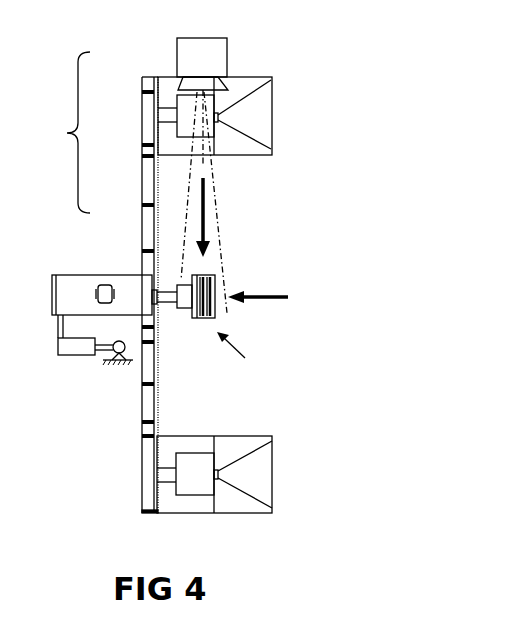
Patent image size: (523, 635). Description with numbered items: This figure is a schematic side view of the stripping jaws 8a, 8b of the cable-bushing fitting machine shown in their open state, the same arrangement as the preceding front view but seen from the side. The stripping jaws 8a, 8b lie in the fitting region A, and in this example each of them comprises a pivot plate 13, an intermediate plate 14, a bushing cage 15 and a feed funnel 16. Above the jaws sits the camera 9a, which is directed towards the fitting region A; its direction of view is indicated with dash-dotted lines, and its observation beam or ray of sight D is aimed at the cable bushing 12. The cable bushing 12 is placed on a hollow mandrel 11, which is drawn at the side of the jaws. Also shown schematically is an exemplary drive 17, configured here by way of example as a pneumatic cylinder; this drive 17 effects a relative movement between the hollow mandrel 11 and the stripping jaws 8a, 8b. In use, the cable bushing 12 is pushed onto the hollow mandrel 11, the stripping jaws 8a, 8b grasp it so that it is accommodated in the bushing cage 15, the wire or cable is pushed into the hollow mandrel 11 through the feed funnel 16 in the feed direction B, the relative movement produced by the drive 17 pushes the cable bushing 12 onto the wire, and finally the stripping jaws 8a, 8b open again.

The stripping jaw 8a is at (151, 132).
The stripping jaw 8b is at (286, 475).
The camera 9a is at (213, 53).
The hollow mandrel 11 is at (83, 287).
The cable bushing 12 is at (198, 293).
The pivot plate 13 is at (146, 82).
The intermediate plate 14 is at (177, 107).
The bushing cage 15 is at (165, 137).
The feed funnel 16 is at (223, 142).
The drive 17 is at (78, 347).
The fitting region A is at (245, 352).
The feed direction B is at (272, 299).
The observation beam D is at (216, 212).